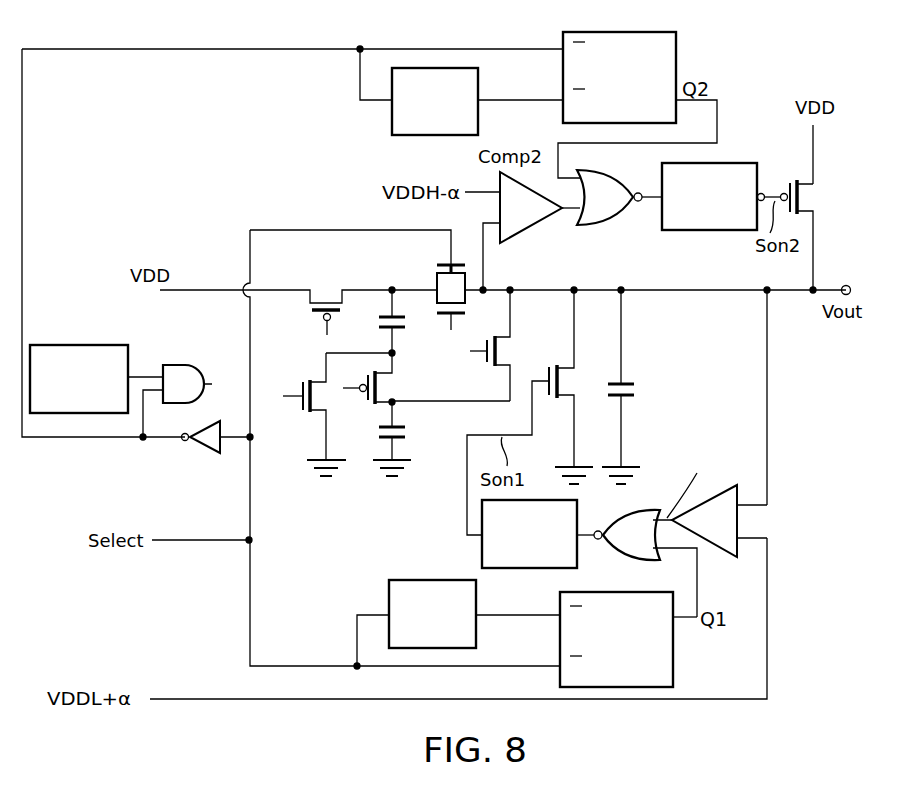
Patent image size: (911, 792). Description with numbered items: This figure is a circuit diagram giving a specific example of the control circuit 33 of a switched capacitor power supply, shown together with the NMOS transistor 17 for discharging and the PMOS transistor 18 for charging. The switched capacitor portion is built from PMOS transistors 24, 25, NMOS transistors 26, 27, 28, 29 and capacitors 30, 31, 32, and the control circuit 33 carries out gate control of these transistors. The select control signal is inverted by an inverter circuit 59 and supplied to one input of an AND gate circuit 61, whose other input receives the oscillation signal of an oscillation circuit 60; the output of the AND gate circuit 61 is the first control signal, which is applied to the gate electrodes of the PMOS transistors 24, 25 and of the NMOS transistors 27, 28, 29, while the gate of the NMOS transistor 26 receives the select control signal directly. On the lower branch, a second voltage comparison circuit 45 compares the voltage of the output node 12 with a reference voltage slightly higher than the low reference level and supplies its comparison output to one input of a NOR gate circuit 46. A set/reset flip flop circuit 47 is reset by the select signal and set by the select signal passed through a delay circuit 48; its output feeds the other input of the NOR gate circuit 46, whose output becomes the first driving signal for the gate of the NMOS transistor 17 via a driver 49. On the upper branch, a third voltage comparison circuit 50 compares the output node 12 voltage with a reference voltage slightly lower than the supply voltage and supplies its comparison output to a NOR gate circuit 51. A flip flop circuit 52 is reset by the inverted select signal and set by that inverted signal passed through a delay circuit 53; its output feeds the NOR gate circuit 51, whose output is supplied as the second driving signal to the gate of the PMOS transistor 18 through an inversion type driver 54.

The output node 12 is at (845, 284).
The NMOS transistor for discharging 17 is at (573, 380).
The PMOS transistor for charging 18 is at (814, 198).
The PMOS transistor 24 is at (322, 290).
The PMOS transistor 25 is at (392, 384).
The NMOS transistor 26 is at (427, 275).
The NMOS transistor 27 is at (327, 397).
The NMOS transistor 28 is at (474, 300).
The NMOS transistor 29 is at (508, 350).
The capacitor 30 is at (378, 316).
The capacitor 31 is at (410, 430).
The capacitor 32 is at (640, 390).
The control circuit 33 is at (375, 508).
The second voltage comparison circuit 45 is at (730, 560).
The NOR gate circuit 46 is at (643, 507).
The flip flop circuit 47 is at (673, 662).
The delay circuit 48 is at (389, 597).
The driver 49 is at (482, 548).
The third voltage comparison circuit 50 is at (530, 232).
The NOR gate circuit 51 is at (600, 226).
The flip flop circuit 52 is at (676, 55).
The delay circuit 53 is at (392, 118).
The inversion type driver 54 is at (690, 231).
The inverter circuit 59 is at (200, 455).
The oscillation circuit 60 is at (95, 345).
The AND gate circuit 61 is at (180, 365).